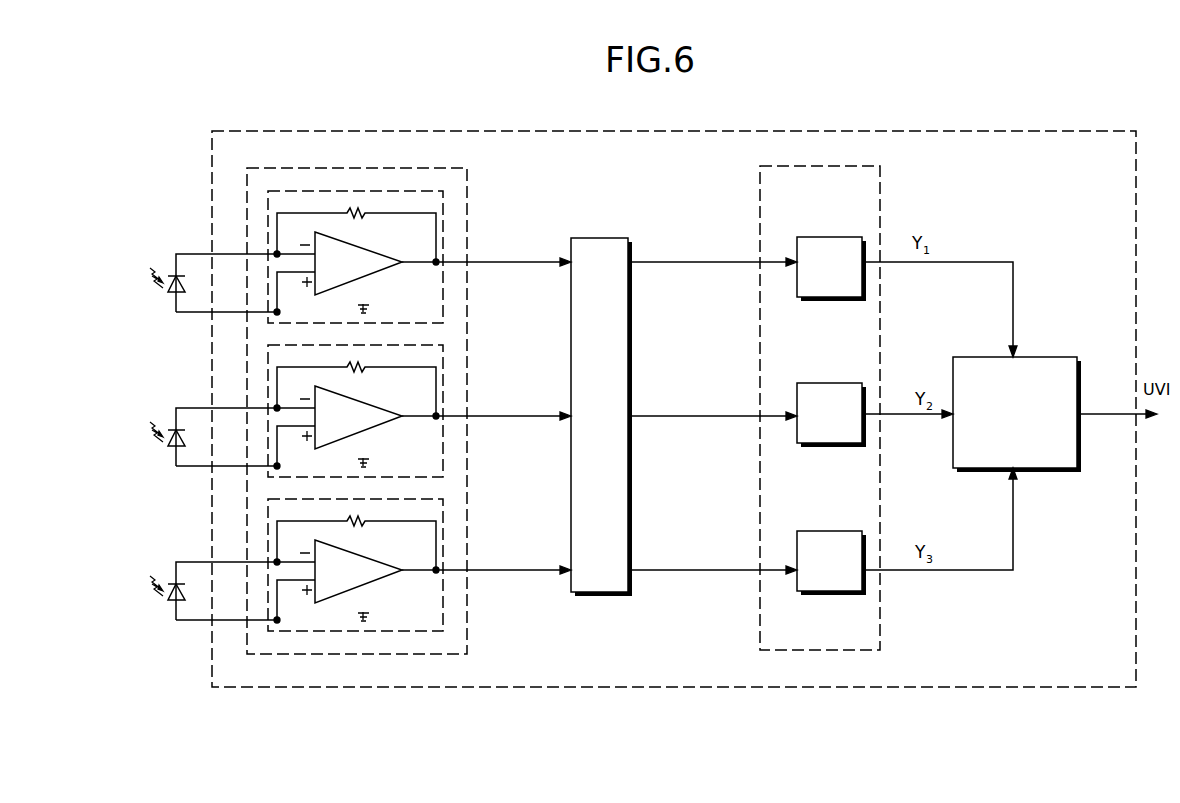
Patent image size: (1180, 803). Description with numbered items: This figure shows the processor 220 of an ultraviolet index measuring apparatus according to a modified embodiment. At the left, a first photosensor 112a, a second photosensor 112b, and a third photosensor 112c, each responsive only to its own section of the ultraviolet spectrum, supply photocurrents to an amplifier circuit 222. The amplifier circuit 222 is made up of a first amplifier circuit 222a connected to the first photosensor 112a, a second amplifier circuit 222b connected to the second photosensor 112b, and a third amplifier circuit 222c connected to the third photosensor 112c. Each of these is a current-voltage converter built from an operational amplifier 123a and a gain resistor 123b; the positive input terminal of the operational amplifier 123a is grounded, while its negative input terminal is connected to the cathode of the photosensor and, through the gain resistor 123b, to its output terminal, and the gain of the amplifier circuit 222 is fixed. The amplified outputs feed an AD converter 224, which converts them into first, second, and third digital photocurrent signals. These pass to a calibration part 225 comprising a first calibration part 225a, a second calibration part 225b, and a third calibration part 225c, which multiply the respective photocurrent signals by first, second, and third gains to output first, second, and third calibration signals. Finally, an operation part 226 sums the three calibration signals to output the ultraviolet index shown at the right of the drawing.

The processor 220 is at (1021, 131).
The amplifier circuit 222 is at (468, 180).
The first amplifier circuit 222a is at (419, 257).
The second amplifier circuit 222b is at (444, 365).
The third amplifier circuit 222c is at (444, 519).
The operational amplifier 123a is at (357, 282).
The gain resistor 123b is at (356, 218).
The first photosensor 112a is at (172, 274).
The second photosensor 112b is at (172, 428).
The third photosensor 112c is at (172, 582).
The AD converter 224 is at (598, 238).
The calibration part 225 is at (880, 196).
The first calibration part 225a is at (836, 237).
The second calibration part 225b is at (836, 383).
The third calibration part 225c is at (836, 531).
The operation part 226 is at (1045, 357).